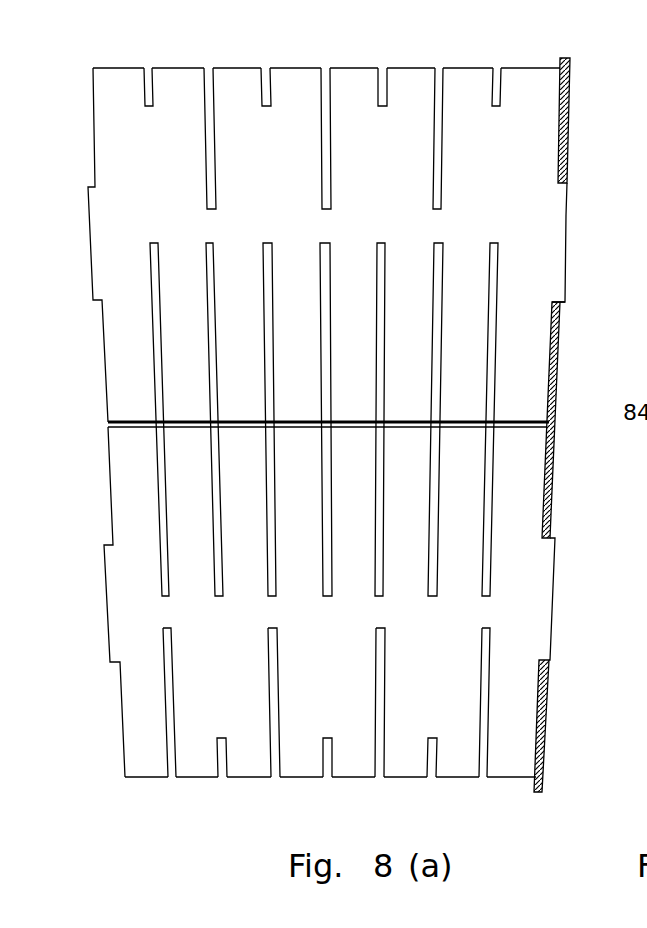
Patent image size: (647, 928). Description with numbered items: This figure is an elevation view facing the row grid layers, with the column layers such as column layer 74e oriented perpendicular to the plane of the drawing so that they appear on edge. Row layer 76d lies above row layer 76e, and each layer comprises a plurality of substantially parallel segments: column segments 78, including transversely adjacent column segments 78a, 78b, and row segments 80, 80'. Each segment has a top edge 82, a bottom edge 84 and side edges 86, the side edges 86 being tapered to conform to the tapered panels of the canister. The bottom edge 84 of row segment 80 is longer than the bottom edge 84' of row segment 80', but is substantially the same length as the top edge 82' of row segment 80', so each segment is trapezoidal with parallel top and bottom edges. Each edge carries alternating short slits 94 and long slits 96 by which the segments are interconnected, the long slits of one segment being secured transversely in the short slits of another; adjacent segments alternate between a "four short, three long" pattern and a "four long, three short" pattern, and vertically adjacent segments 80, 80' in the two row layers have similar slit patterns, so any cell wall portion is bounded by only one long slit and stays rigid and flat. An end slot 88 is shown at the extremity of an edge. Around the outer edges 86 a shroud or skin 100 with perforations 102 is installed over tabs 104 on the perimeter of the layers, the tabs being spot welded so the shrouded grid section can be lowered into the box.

The column layer 74e is at (212, 478).
The row layer 76d is at (500, 140).
The row layer 76e is at (510, 495).
The column segment 78 is at (498, 290).
The column segment 78a is at (152, 247).
The column segment 78b is at (211, 266).
The row segment 80 is at (344, 235).
The row segment 80' is at (308, 627).
The top edge 82 is at (326, 38).
The top edge 82' is at (304, 408).
The bottom edge 84 is at (303, 453).
The bottom edge 84' is at (302, 802).
The side edge 86 is at (95, 168).
The end slot 88 is at (494, 243).
The short slit 94 is at (147, 68).
The long slit 96 is at (207, 68).
The shroud 100 is at (569, 130).
The perforation 102 is at (568, 183).
The tab 104 is at (567, 272).